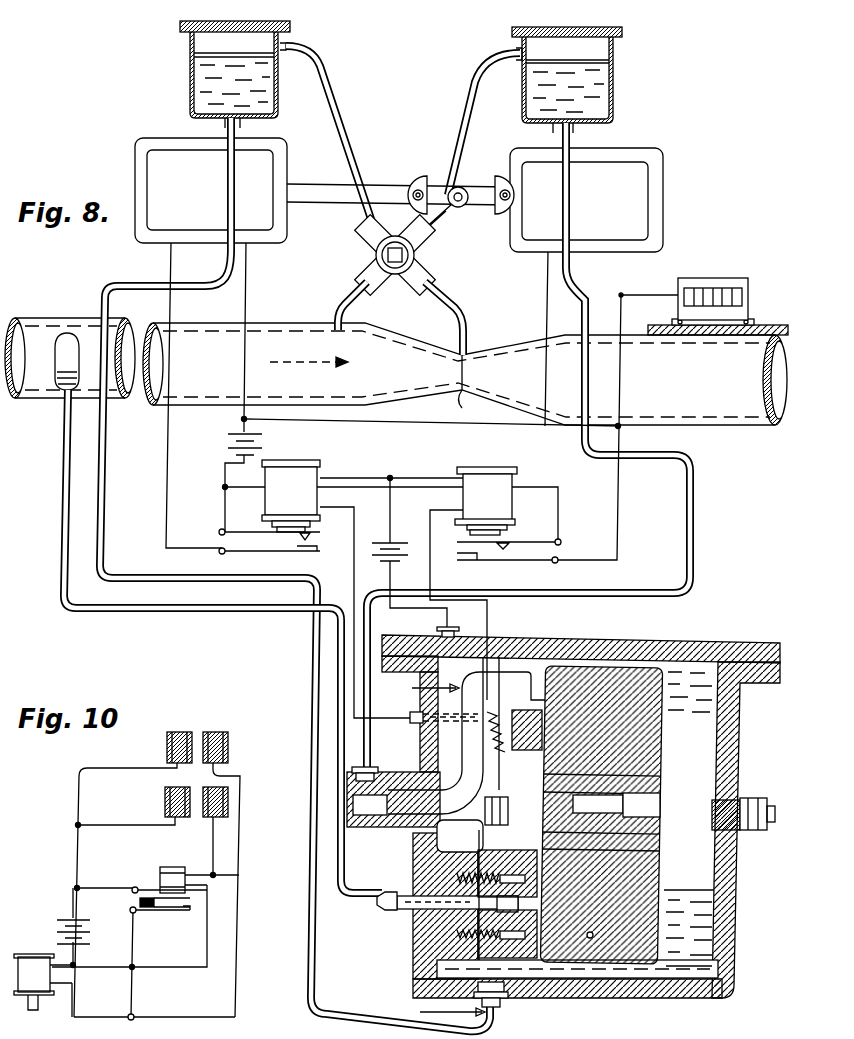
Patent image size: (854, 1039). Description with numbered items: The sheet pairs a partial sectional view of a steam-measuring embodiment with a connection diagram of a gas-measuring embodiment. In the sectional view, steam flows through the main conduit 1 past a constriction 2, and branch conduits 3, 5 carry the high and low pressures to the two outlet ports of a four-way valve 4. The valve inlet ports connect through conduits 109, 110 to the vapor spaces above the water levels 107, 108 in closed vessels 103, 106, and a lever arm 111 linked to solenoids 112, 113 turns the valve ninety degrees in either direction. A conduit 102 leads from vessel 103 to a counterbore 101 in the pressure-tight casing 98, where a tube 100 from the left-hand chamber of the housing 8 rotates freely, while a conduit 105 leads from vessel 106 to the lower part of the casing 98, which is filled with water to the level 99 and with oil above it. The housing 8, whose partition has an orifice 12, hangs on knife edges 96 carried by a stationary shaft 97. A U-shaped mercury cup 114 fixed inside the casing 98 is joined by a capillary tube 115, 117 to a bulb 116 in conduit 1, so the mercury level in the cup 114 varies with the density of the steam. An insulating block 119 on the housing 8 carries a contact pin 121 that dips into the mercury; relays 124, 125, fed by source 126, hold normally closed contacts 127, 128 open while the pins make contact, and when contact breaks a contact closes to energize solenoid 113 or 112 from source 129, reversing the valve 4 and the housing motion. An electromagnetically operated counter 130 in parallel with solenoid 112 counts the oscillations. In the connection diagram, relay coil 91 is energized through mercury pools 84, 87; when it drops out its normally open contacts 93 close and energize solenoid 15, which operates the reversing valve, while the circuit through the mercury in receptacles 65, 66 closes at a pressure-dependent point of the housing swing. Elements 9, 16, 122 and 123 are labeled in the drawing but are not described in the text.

In FIG. 8, the main conduit 1 is at (396, 371).
In FIG. 8, the constriction 2 is at (467, 405).
In FIG. 8, the branch conduit 3 is at (462, 305).
In FIG. 8, the four-way valve 4 is at (360, 258).
In FIG. 8, the branch conduit 5 is at (340, 290).
In FIG. 8, the housing 8 is at (672, 688).
In FIG. 8, the gas inlet 9 is at (448, 840).
In FIG. 8, the orifice 12 is at (590, 940).
In FIG. 10, the solenoid 15 is at (43, 982).
In FIG. 10, the battery 16 is at (56, 920).
In FIG. 10, the mercury receptacle 65 is at (228, 748).
In FIG. 10, the mercury receptacle 66 is at (167, 748).
In FIG. 10, the mercury pool 84 is at (228, 802).
In FIG. 10, the mercury pool 87 is at (165, 802).
In FIG. 10, the relay coil 91 is at (160, 872).
In FIG. 10, the normally open contacts 93 is at (182, 912).
In FIG. 8, the knife edges 96 is at (658, 790).
In FIG. 8, the stationary shaft 97 is at (705, 836).
In FIG. 8, the pressure-tight casing 98 is at (730, 766).
In FIG. 8, the liquid level 99 is at (716, 880).
In FIG. 8, the tube 100 is at (528, 650).
In FIG. 8, the counterbore 101 is at (388, 845).
In FIG. 8, the conduit 102 is at (648, 580).
In FIG. 8, the closed vessel 103 is at (613, 98).
In FIG. 8, the conduit 105 is at (316, 970).
In FIG. 8, the closed vessel 106 is at (190, 96).
In FIG. 8, the water level 107 is at (600, 57).
In FIG. 8, the water level 108 is at (210, 51).
In FIG. 8, the conduit 109 is at (470, 120).
In FIG. 8, the conduit 110 is at (340, 125).
In FIG. 8, the lever arm 111 is at (438, 230).
In FIG. 8, the solenoid 112 is at (586, 200).
In FIG. 8, the solenoid 113 is at (211, 190).
In FIG. 8, the U-shaped mercury cup 114 is at (472, 824).
In FIG. 8, the capillary tube 115 is at (392, 900).
In FIG. 8, the bulb 116 is at (70, 333).
In FIG. 8, the capillary tube 117 is at (155, 612).
In FIG. 8, the insulating block 119 is at (530, 665).
In FIG. 8, the contact pin 121 is at (500, 805).
In FIG. 8, the contact 122 is at (354, 568).
In FIG. 8, the electrode 123 is at (412, 726).
In FIG. 8, the relay 124 is at (515, 455).
In FIG. 8, the relay 125 is at (295, 470).
In FIG. 8, the source 126 is at (395, 540).
In FIG. 8, the normally closed contact 127 is at (505, 548).
In FIG. 8, the normally closed contact 128 is at (270, 555).
In FIG. 8, the source of energy 129 is at (228, 440).
In FIG. 8, the electromagnetically operated counter 130 is at (705, 278).